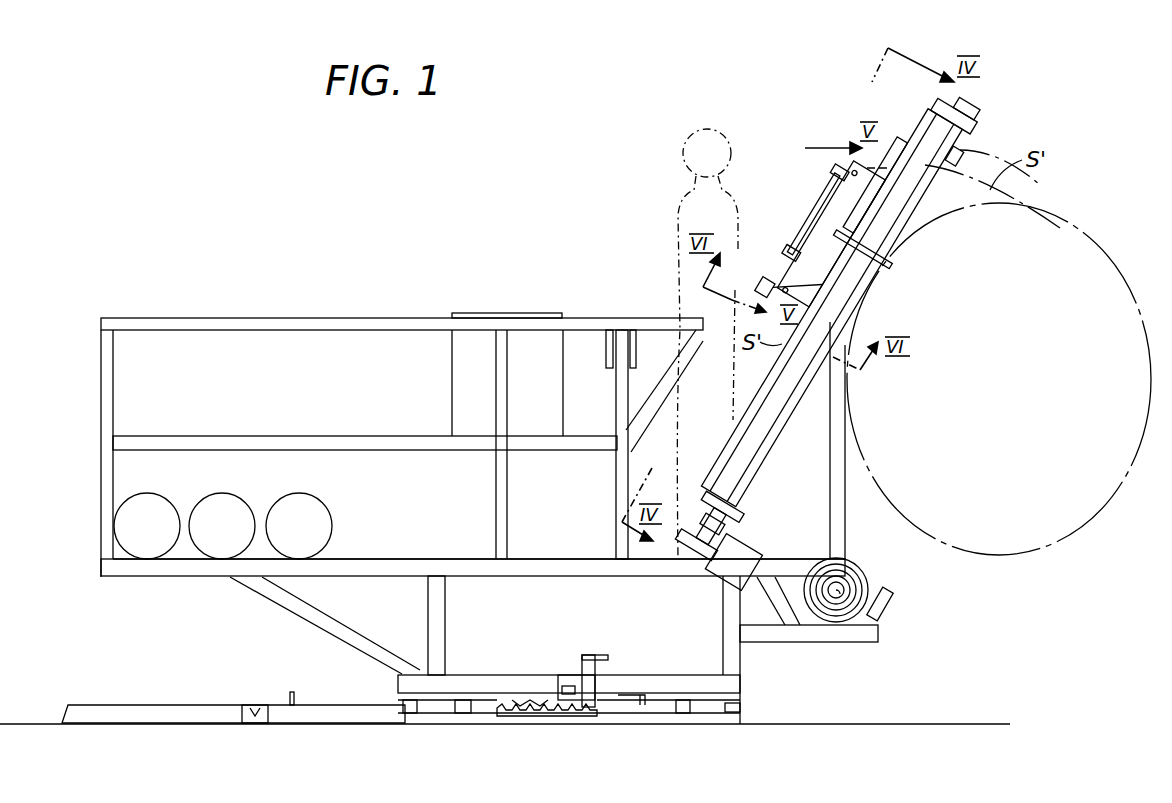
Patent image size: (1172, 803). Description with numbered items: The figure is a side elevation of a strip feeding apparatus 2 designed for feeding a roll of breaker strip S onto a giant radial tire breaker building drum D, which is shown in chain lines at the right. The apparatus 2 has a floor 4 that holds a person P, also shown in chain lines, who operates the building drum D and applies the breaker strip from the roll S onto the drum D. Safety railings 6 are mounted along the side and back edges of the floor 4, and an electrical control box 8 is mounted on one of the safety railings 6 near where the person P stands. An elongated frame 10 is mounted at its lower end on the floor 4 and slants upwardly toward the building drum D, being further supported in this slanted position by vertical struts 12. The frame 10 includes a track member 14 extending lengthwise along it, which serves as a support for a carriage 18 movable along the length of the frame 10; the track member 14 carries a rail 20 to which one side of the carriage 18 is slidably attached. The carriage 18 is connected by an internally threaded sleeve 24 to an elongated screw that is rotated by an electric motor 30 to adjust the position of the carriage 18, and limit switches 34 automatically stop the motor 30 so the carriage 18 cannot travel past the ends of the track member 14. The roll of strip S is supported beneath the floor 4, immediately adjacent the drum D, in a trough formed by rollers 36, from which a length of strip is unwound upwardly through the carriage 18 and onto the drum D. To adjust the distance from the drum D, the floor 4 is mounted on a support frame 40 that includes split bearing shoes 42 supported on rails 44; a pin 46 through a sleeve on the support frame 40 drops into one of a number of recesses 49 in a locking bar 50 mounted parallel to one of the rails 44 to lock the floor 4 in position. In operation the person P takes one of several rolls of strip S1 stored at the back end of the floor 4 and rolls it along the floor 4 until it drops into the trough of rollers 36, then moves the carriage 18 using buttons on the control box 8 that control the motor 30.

The strip feeding apparatus 2 is at (200, 302).
The floor 4 is at (366, 562).
The safety railings 6 is at (315, 318).
The electrical control box 8 is at (518, 313).
The elongated frame 10 is at (916, 116).
The vertical struts 12 is at (845, 417).
The track member 14 is at (745, 477).
The carriage 18 is at (795, 203).
The rail 20 is at (898, 158).
The internally threaded sleeve 24 is at (880, 262).
The electric motor 30 is at (742, 560).
The limit switches 34 is at (752, 488).
The rollers 36 is at (875, 623).
The support frame 40 is at (445, 632).
The split bearing shoes 42 is at (402, 698).
The rails 44 is at (135, 712).
The pin 46 is at (578, 672).
The recesses 49 is at (548, 705).
The locking bar 50 is at (545, 716).
The roll of breaker strip S is at (860, 582).
The rolls of strip S1 is at (272, 470).
The building drum D is at (1060, 232).
The person P is at (728, 135).